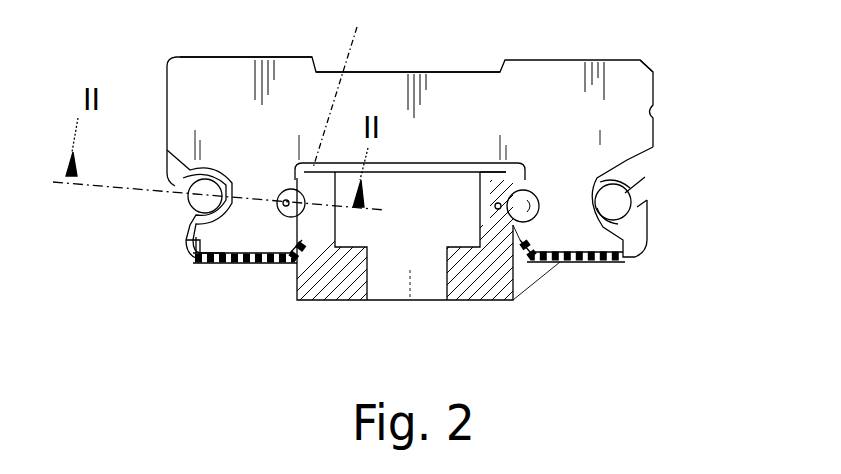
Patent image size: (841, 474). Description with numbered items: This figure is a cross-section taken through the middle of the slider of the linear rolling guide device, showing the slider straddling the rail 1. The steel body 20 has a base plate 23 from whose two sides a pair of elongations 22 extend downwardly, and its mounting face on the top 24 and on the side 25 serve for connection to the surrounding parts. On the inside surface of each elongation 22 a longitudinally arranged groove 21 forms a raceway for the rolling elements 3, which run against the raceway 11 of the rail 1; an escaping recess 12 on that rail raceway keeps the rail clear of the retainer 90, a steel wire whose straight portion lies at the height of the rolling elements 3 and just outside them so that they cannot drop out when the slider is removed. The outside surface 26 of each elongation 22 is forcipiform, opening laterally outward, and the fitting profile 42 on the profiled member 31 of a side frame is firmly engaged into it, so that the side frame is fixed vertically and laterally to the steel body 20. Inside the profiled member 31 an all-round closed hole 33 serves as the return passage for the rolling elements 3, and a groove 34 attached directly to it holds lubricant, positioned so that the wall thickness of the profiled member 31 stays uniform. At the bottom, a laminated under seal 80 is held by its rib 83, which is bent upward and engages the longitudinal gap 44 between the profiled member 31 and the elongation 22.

The rail 1 is at (327, 280).
The rolling elements 3 is at (520, 208).
The raceway of the rail 11 is at (507, 198).
The escaping recess 12 is at (354, 89).
The steel body 20 is at (225, 108).
The longitudinally arranged grooves 21 is at (555, 170).
The elongations 22 is at (560, 263).
The base plate 23 is at (403, 135).
The top mounting face 24 is at (253, 58).
The side mounting face 25 is at (653, 87).
The outside surface of the elongation 26 is at (173, 185).
The profiled member 31 is at (177, 218).
The all-round closed hole 33 is at (180, 197).
The longitudinally arranged groove 34 is at (190, 172).
The fitting profile 42 is at (627, 162).
The longitudinally arranged gap 44 is at (190, 250).
The under seals 80 is at (228, 262).
The rib 83 is at (627, 253).
The retainer 90 is at (280, 262).